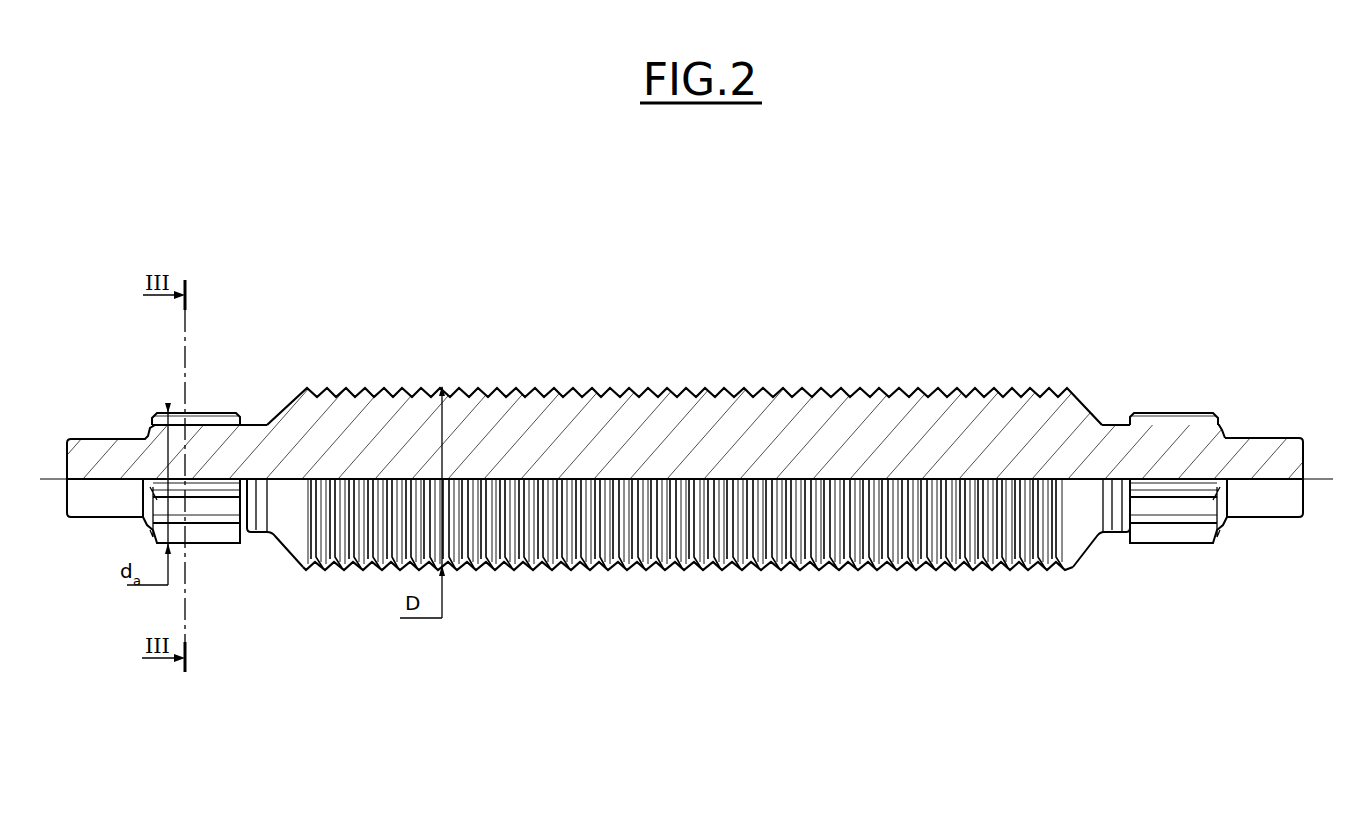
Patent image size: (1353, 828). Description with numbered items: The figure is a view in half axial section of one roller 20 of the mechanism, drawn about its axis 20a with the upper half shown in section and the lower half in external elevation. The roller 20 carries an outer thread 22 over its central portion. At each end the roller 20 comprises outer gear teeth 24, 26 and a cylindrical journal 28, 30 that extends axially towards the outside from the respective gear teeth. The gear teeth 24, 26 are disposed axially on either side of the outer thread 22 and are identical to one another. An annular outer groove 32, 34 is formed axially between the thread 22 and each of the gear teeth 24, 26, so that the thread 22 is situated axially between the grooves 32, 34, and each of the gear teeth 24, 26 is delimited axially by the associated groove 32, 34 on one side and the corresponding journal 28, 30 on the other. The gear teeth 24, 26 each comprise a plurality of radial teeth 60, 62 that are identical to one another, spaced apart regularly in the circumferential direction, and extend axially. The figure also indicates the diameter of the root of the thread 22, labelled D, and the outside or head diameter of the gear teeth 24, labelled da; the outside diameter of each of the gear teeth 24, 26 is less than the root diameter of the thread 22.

The roller 20 is at (752, 348).
The shaft axis 20a is at (1320, 478).
The outer thread 22 is at (818, 387).
The outer gear teeth 24 is at (170, 392).
The outer gear teeth 26 is at (1197, 403).
The cylindrical journal 28 is at (108, 439).
The cylindrical journal 30 is at (1265, 438).
The annular outer groove 32 is at (253, 534).
The annular outer groove 34 is at (1118, 533).
The radial teeth 60 is at (206, 404).
The radial teeth 62 is at (1142, 404).